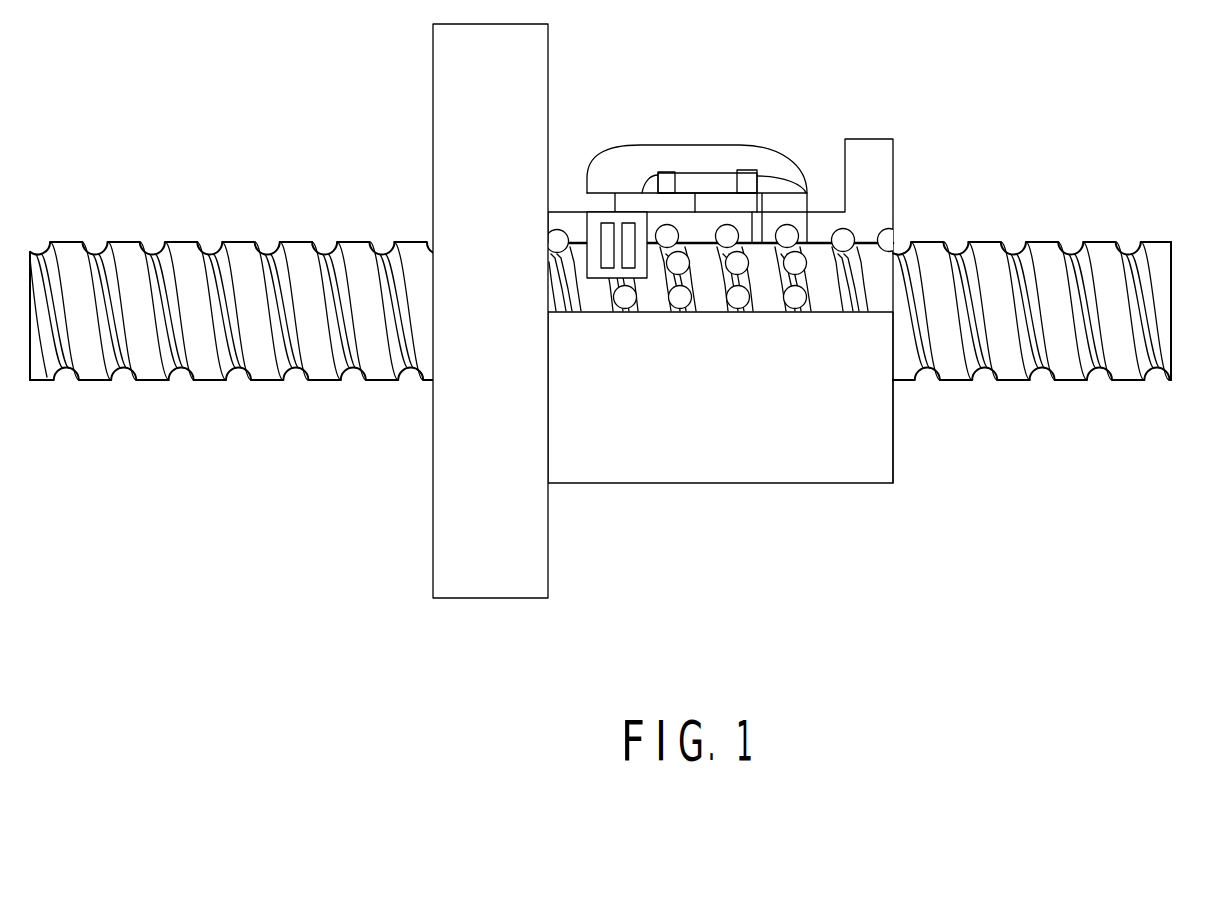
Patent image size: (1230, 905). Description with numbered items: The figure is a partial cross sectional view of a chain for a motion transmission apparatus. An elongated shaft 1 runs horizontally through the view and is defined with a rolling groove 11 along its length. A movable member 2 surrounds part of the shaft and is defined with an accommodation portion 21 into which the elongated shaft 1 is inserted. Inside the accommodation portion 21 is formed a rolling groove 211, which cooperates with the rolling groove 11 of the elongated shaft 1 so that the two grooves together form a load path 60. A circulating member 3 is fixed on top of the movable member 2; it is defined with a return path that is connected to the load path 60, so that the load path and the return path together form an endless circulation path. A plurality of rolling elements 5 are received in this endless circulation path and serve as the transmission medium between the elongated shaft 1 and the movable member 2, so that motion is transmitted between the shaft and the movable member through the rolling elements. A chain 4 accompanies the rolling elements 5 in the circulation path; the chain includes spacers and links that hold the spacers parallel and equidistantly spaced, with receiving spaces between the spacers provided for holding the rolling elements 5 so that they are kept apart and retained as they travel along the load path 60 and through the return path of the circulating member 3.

The elongated shaft 1 is at (1171, 260).
The rolling groove 11 is at (1085, 360).
The movable member 2 is at (866, 185).
The accommodation portion 21 is at (893, 238).
The rolling groove 211 is at (667, 228).
The circulating member 3 is at (699, 156).
The chain 4 is at (790, 238).
The rolling elements 5 is at (738, 297).
The load path 60 is at (727, 238).